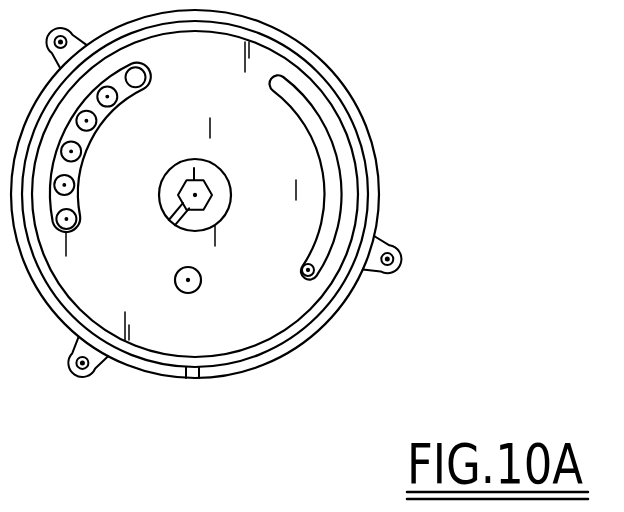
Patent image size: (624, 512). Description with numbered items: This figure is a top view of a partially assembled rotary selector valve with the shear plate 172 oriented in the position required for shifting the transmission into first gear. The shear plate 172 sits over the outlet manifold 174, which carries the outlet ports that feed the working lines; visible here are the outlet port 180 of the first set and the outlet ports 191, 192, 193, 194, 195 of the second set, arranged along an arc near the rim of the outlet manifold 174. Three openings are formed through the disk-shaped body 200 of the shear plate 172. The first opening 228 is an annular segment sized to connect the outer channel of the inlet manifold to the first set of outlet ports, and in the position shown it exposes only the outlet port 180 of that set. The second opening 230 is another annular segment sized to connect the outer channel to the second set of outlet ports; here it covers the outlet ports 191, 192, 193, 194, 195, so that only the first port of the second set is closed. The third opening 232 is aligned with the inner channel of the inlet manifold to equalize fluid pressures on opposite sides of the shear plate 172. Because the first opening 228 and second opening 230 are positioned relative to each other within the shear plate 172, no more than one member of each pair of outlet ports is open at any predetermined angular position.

The outlet manifold 174 is at (348, 96).
The shear plate 172 is at (314, 314).
The first opening 228 is at (309, 145).
The outlet port 180 is at (304, 265).
The disk-shaped body 200 is at (144, 294).
The third opening 232 is at (201, 282).
The second opening 230 is at (148, 72).
The outlet port 195 is at (118, 93).
The outlet port 194 is at (97, 121).
The outlet port 193 is at (82, 151).
The outlet port 192 is at (75, 183).
The outlet port 191 is at (77, 219).